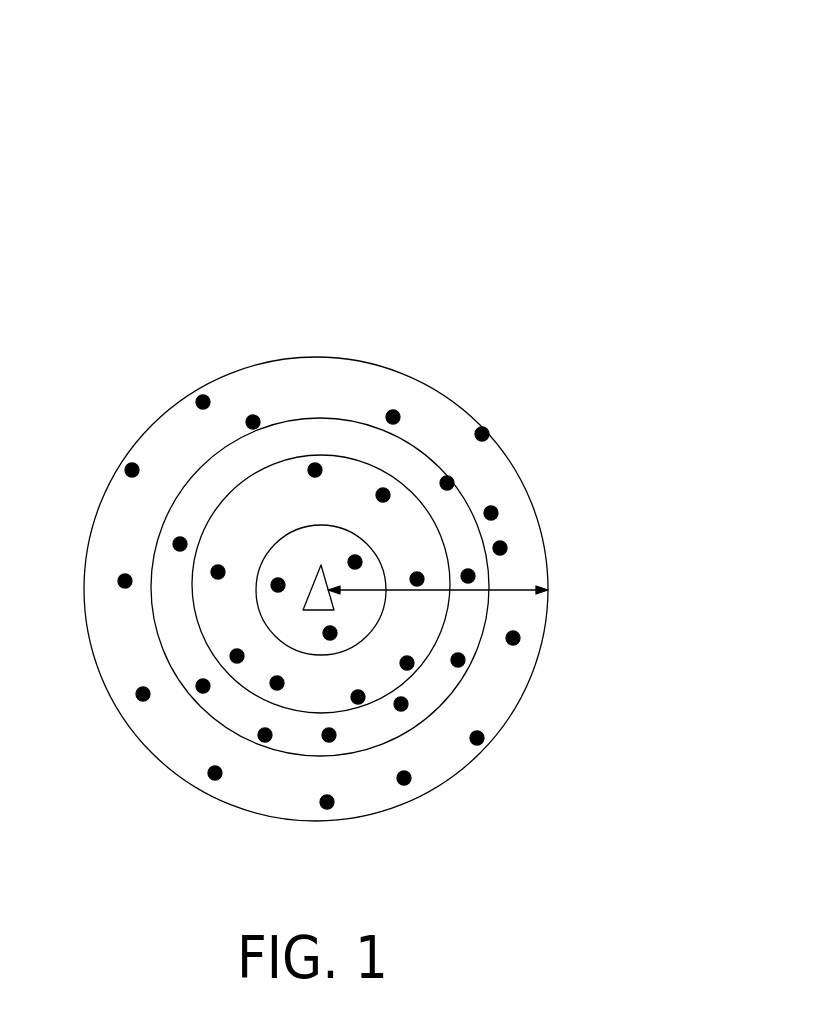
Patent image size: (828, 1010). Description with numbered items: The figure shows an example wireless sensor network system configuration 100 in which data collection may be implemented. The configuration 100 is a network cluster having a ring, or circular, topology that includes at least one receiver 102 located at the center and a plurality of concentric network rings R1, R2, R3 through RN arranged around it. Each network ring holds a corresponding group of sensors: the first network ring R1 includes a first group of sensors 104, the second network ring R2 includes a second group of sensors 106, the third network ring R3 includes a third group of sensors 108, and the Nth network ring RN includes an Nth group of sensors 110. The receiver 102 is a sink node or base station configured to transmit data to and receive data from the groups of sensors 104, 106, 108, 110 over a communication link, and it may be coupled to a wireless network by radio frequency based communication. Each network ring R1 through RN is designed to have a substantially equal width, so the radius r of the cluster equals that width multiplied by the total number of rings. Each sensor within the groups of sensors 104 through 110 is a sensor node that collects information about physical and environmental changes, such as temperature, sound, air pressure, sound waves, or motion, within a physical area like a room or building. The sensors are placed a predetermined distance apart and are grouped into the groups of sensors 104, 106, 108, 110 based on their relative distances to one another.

The wireless sensor network system configuration 100 is at (70, 50).
The receiver 102 is at (185, 394).
The first group of sensors 104 is at (464, 373).
The second group of sensors 106 is at (469, 489).
The third group of sensors 108 is at (460, 563).
The Nth group of sensors 110 is at (432, 602).
The first network ring R1 is at (207, 498).
The second network ring R2 is at (235, 569).
The third network ring R3 is at (251, 587).
The Nth network ring RN is at (284, 589).